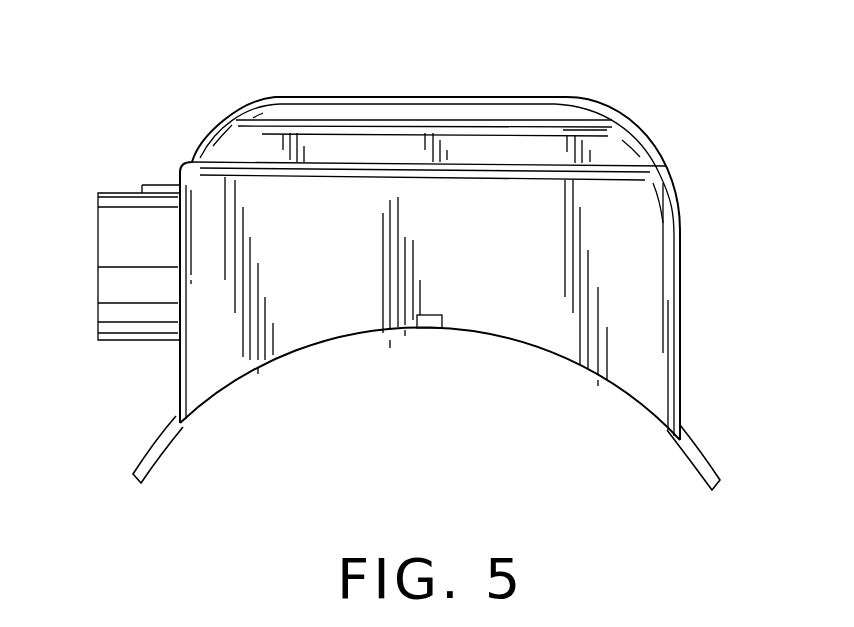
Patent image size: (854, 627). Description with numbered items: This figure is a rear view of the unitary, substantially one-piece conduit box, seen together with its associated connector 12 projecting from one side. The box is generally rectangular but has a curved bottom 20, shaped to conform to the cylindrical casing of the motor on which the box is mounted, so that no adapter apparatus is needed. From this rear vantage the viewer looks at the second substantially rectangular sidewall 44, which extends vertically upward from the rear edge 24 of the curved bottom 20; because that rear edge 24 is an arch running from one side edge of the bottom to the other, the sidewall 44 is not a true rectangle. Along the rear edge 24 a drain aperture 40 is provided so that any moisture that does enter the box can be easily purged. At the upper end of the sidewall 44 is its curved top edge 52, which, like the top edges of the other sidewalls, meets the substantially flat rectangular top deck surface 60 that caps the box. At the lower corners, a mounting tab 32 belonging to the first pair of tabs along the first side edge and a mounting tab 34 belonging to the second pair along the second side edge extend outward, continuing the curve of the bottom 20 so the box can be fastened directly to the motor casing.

The top deck surface 60 is at (420, 97).
The curved top edge 52 is at (593, 123).
The connector 12 is at (122, 207).
The second substantially rectangular sidewall 44 is at (496, 247).
The drain aperture 40 is at (427, 327).
The curved bottom 20 is at (270, 365).
The rear edge 24 is at (582, 367).
The mounting tab 32 is at (152, 450).
The mounting tab 34 is at (703, 467).